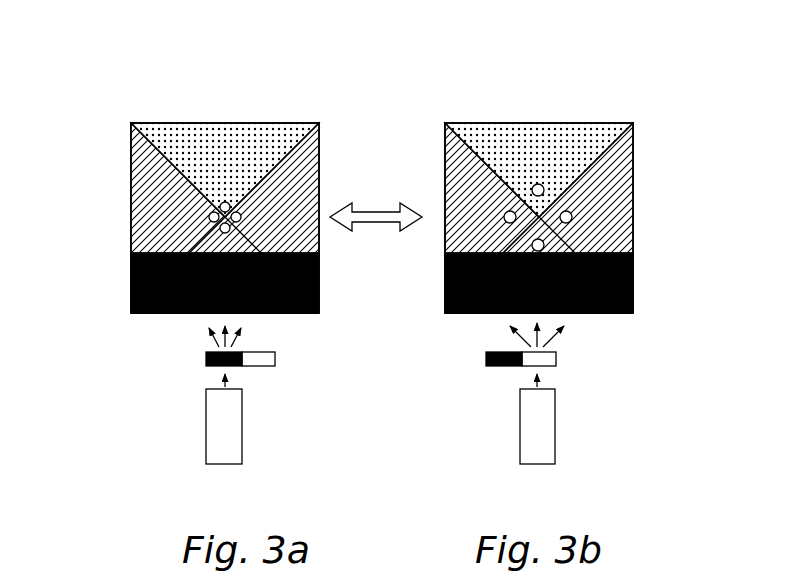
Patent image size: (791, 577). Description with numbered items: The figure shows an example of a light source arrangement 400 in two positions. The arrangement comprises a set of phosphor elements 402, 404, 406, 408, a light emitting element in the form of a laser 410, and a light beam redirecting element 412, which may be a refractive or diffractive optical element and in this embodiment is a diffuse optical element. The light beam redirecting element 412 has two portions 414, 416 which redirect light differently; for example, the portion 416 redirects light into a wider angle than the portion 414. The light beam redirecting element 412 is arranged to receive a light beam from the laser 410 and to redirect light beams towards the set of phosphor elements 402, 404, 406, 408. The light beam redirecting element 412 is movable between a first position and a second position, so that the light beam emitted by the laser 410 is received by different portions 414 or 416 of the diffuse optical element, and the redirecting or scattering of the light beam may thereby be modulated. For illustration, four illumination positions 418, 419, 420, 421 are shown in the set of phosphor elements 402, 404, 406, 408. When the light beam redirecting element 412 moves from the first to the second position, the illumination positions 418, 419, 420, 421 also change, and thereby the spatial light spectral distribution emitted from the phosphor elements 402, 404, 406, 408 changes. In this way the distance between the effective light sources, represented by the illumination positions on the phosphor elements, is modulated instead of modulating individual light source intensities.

In FIG. 3A, the optical device 400 is at (100, 63).
In FIG. 3B, the optical device 400 is at (416, 63).
In FIG. 3A, the phosphor element 402 is at (143, 200).
In FIG. 3B, the phosphor element 402 is at (446, 188).
In FIG. 3A, the phosphor element 404 is at (266, 140).
In FIG. 3B, the phosphor element 404 is at (583, 138).
In FIG. 3A, the phosphor element 406 is at (307, 172).
In FIG. 3B, the phosphor element 406 is at (622, 170).
In FIG. 3A, the phosphor element 408 is at (282, 311).
In FIG. 3B, the phosphor element 408 is at (597, 311).
In FIG. 3A, the laser 410 is at (235, 447).
In FIG. 3B, the laser 410 is at (552, 447).
In FIG. 3A, the light beam redirecting element 412 is at (310, 378).
In FIG. 3B, the light beam redirecting element 412 is at (604, 380).
In FIG. 3A, the portion 414 is at (212, 367).
In FIG. 3B, the portion 414 is at (507, 367).
In FIG. 3A, the portion 416 is at (262, 368).
In FIG. 3B, the portion 416 is at (550, 366).
In FIG. 3A, the illumination position 418 is at (209, 218).
In FIG. 3B, the illumination position 418 is at (504, 217).
In FIG. 3A, the illumination position 419 is at (226, 202).
In FIG. 3B, the illumination position 419 is at (539, 184).
In FIG. 3A, the illumination position 420 is at (241, 217).
In FIG. 3B, the illumination position 420 is at (572, 218).
In FIG. 3A, the illumination position 421 is at (158, 313).
In FIG. 3B, the illumination position 421 is at (482, 313).